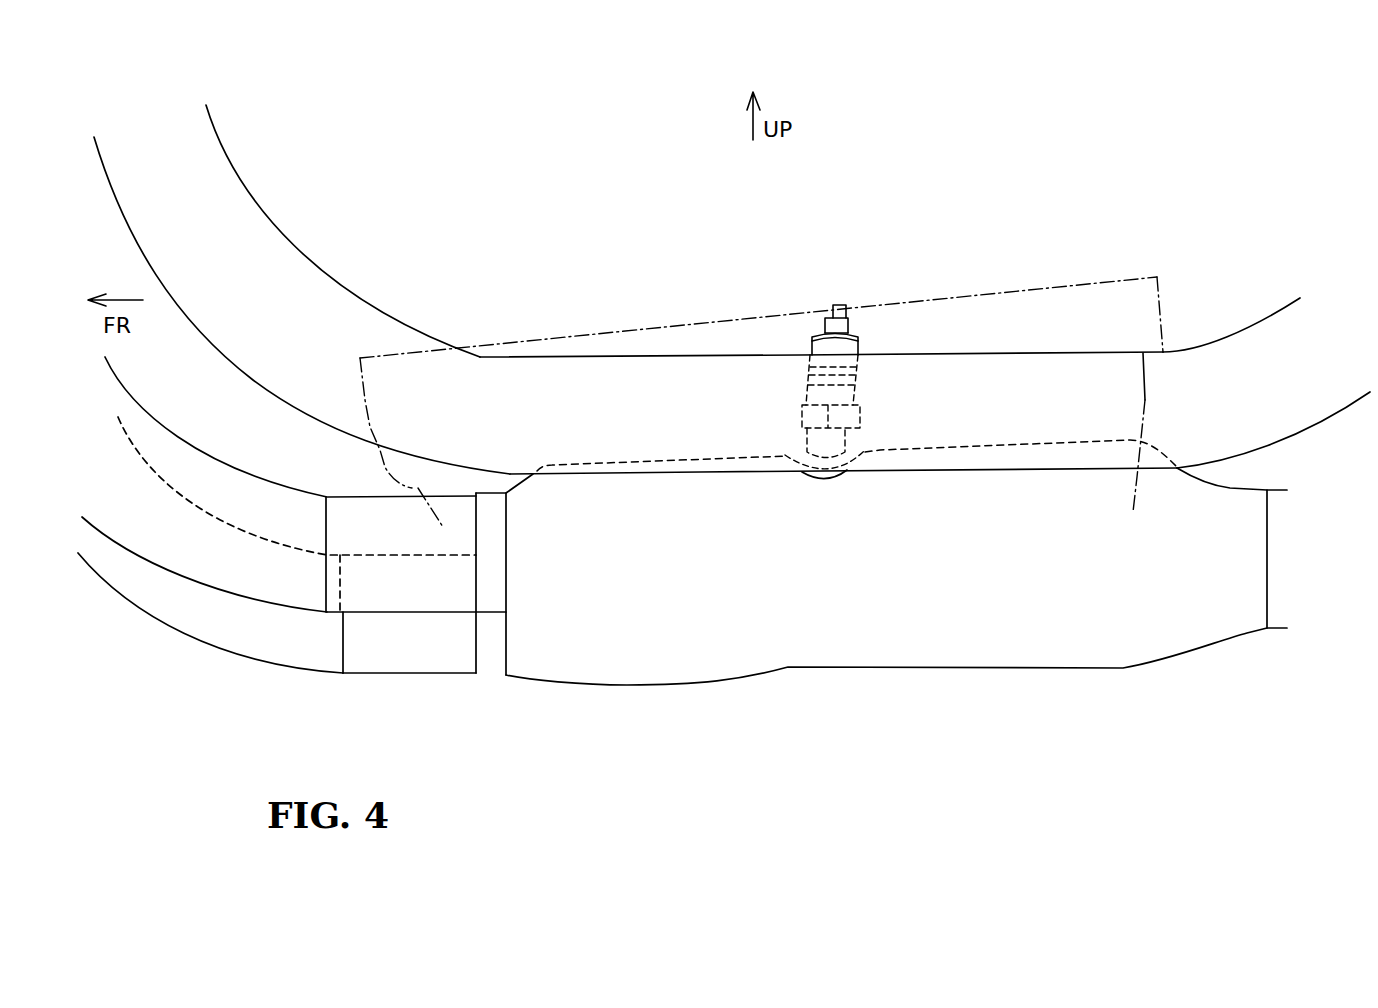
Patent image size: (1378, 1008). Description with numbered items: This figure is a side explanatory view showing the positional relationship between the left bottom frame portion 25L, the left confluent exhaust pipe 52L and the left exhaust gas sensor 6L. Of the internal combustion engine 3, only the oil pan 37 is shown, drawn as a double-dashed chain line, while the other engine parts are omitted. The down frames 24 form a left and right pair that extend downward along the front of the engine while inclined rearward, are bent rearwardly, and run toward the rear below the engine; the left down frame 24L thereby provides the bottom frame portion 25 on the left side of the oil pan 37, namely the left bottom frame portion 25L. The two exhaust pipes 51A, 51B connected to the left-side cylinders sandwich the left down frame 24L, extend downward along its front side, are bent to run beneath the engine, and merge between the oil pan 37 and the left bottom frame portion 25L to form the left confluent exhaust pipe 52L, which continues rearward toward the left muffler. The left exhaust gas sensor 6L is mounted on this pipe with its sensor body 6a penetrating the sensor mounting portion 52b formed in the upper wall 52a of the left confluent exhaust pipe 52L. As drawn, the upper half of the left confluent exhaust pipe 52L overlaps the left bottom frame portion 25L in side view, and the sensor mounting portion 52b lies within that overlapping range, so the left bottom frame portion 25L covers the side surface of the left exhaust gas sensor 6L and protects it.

The left down frame 24L is at (227, 163).
The down frames 24 is at (343, 231).
The left bottom frame portion 25L is at (680, 356).
The bottom frame portion 25 is at (925, 328).
The oil pan 37 is at (1118, 277).
The internal combustion engine 3 is at (761, 370).
The sensor body 6a is at (813, 353).
The left exhaust gas sensor 6L is at (863, 387).
The upper wall 52a is at (933, 447).
The sensor mounting portion 52b is at (798, 447).
The left confluent exhaust pipe 52L is at (627, 684).
The exhaust pipe 51A is at (208, 593).
The exhaust pipe 51B is at (170, 630).